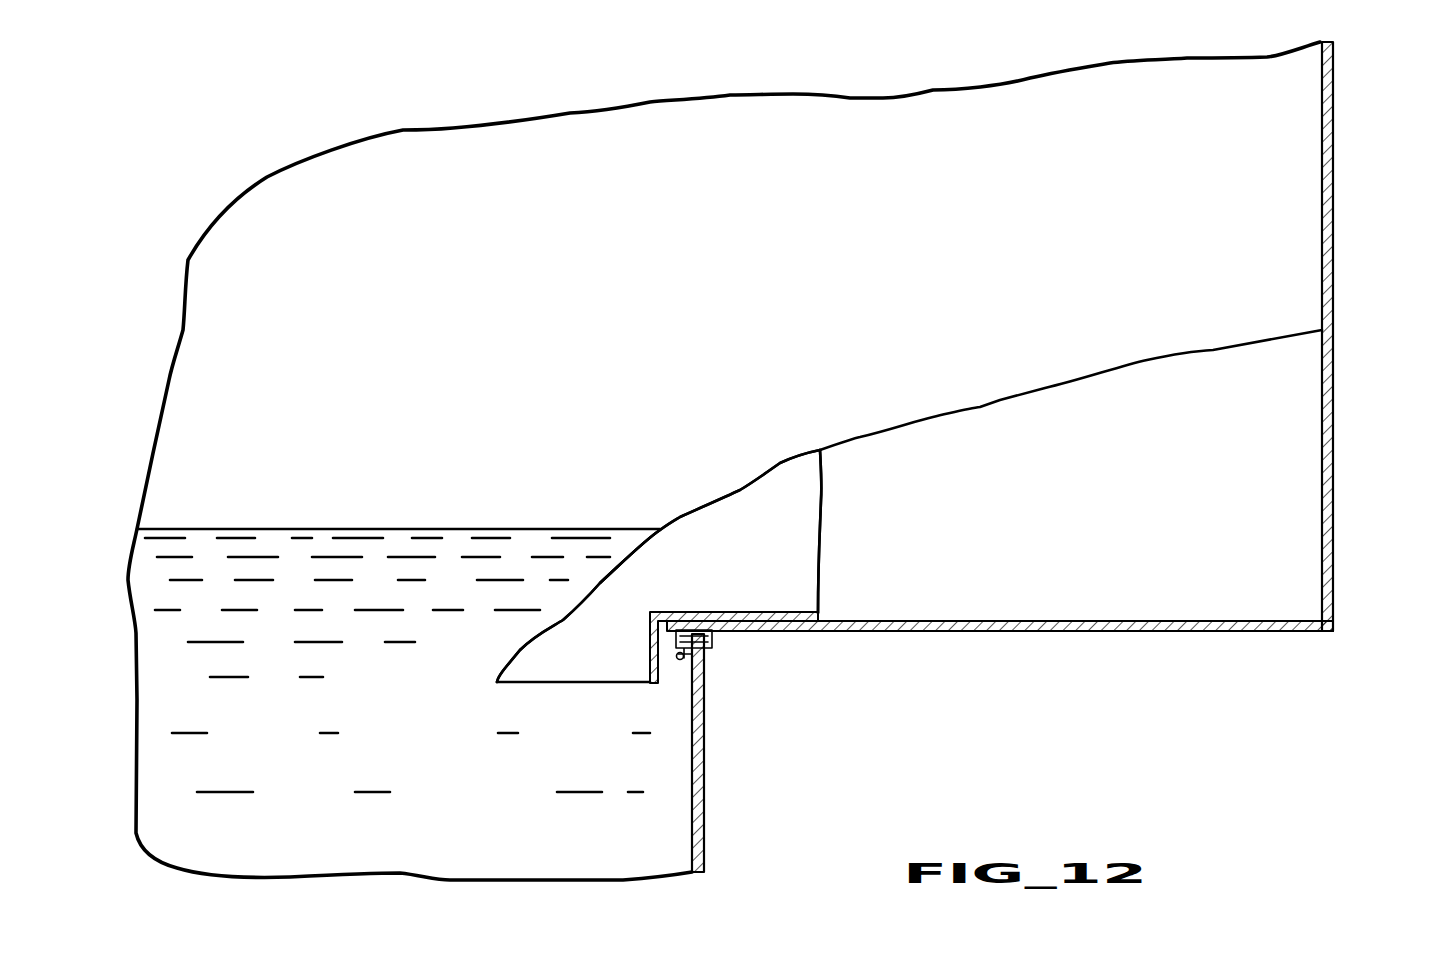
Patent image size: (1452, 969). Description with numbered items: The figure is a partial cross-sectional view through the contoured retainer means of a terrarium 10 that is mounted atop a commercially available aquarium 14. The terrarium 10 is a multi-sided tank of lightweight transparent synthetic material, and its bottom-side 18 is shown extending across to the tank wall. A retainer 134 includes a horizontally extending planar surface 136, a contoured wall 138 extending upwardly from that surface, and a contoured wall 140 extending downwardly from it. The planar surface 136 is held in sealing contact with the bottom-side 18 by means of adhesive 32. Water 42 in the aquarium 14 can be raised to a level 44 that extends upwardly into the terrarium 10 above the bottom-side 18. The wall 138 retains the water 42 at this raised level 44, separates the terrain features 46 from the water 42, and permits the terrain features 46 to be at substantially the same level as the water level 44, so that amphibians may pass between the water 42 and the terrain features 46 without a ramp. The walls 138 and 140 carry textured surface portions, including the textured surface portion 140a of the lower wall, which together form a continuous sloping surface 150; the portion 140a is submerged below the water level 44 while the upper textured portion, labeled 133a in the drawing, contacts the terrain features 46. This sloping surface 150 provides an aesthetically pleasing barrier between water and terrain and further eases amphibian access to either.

The terrarium 10 is at (1348, 237).
The aquarium 14 is at (690, 833).
The bottom-side 18 is at (1153, 631).
The adhesive 32 is at (832, 631).
The water 42 is at (453, 640).
The level 44 is at (480, 529).
The terrain features 46 is at (1045, 388).
The inclined surface of wedge 133a is at (743, 487).
The retainer 134 is at (822, 570).
The planar surface 136 is at (755, 630).
The contoured wall 138 is at (778, 492).
The contoured wall 140 is at (583, 652).
The textured surface portion 140a is at (517, 650).
The continuous sloping surface 150 is at (643, 543).